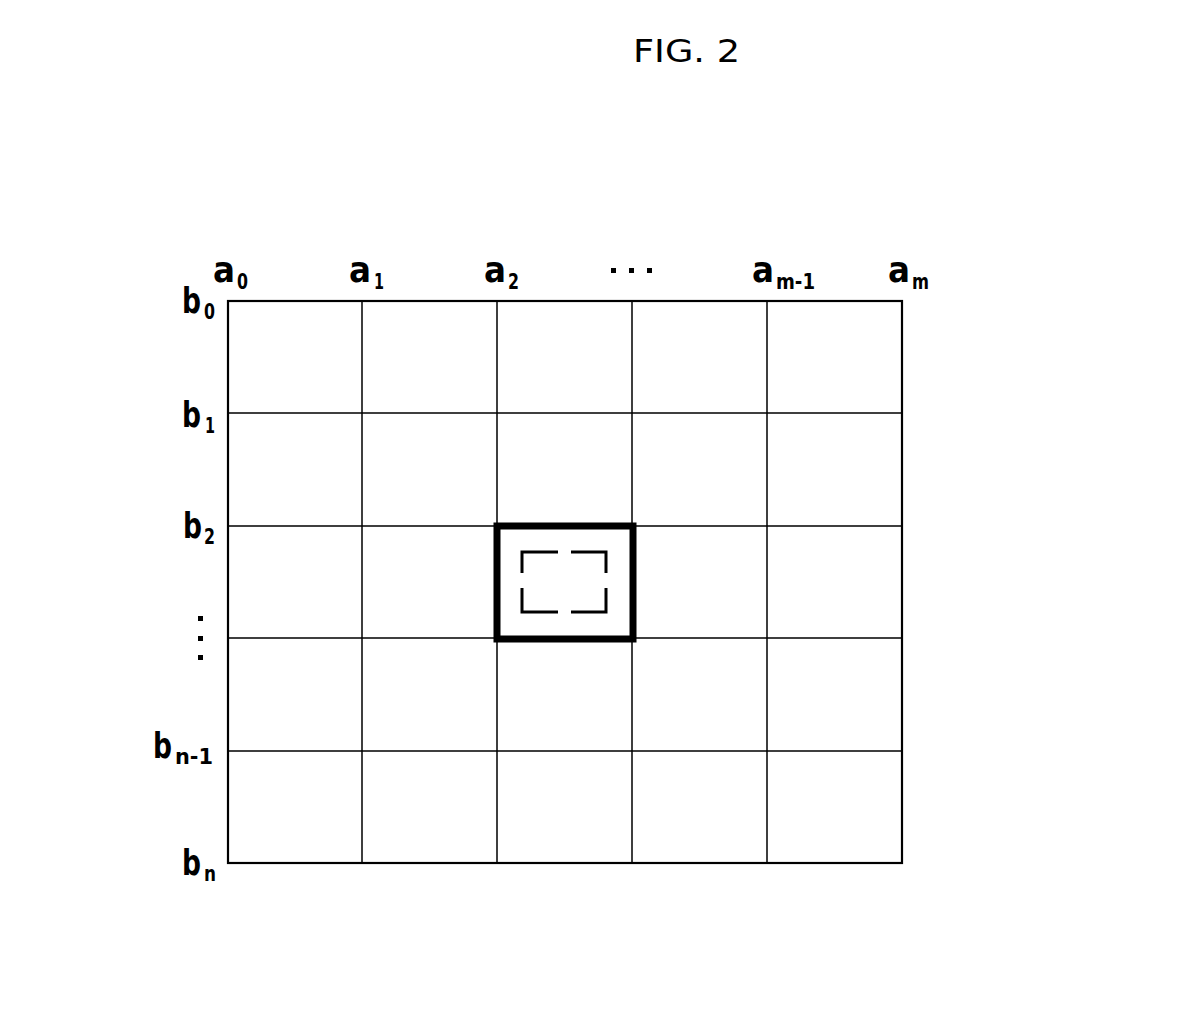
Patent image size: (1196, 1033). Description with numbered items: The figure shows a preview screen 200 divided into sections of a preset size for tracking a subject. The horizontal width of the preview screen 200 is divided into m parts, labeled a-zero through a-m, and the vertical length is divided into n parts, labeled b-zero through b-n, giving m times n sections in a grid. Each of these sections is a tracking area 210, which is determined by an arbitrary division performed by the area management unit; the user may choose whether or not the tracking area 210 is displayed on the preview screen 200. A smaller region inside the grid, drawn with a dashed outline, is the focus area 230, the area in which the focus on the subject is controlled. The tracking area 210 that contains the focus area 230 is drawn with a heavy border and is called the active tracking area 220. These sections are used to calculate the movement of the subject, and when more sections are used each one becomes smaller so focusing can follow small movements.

The preview screen 200 is at (855, 300).
The tracking area 210 is at (706, 473).
The active tracking area 220 is at (637, 573).
The focus area 230 is at (606, 598).